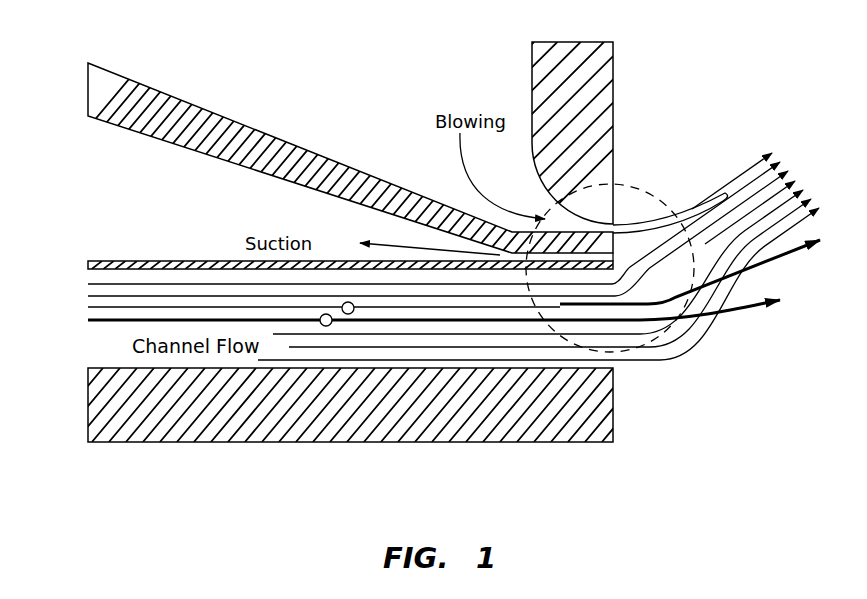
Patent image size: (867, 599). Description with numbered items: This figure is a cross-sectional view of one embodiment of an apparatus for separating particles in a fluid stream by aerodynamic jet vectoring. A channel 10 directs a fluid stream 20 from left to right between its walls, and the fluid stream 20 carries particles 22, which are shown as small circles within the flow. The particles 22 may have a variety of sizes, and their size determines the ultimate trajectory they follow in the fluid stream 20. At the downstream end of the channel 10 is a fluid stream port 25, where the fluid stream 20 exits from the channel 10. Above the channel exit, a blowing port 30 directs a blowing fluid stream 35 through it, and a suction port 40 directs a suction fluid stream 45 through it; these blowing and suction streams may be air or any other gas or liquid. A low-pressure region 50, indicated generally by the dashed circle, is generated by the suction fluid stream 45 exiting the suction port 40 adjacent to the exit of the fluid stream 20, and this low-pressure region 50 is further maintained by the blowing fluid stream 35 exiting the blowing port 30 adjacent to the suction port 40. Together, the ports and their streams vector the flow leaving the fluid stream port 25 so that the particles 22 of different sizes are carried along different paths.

The channel 10 is at (88, 368).
The fluid stream 20 is at (84, 303).
The particles 22 is at (349, 314).
The fluid stream port 25 is at (613, 368).
The blowing port 30 is at (618, 251).
The blowing fluid stream 35 is at (690, 198).
The suction port 40 is at (636, 248).
The suction fluid stream 45 is at (655, 242).
The low-pressure region 50 is at (614, 222).